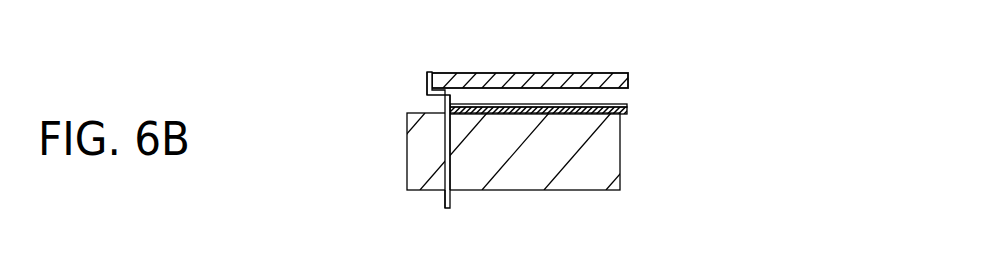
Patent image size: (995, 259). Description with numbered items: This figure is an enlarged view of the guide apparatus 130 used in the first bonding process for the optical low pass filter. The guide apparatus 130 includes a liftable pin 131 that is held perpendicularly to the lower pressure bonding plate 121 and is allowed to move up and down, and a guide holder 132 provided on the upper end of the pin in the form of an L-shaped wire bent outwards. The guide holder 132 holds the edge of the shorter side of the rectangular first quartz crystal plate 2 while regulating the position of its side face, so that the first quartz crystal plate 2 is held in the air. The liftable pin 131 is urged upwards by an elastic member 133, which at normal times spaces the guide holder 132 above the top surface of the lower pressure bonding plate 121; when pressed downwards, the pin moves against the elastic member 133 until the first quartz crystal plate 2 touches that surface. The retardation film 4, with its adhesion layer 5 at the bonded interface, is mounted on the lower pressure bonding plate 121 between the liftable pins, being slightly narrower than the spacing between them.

The first quartz crystal plate 2 is at (595, 73).
The retardation film 4 is at (612, 116).
The adhesion layer 5 is at (575, 104).
The lower pressure bonding plate 121 is at (536, 192).
The guide apparatus 130 is at (356, 125).
The liftable pin 131 is at (430, 99).
The guide holder 132 is at (427, 80).
The elastic member 133 is at (445, 200).